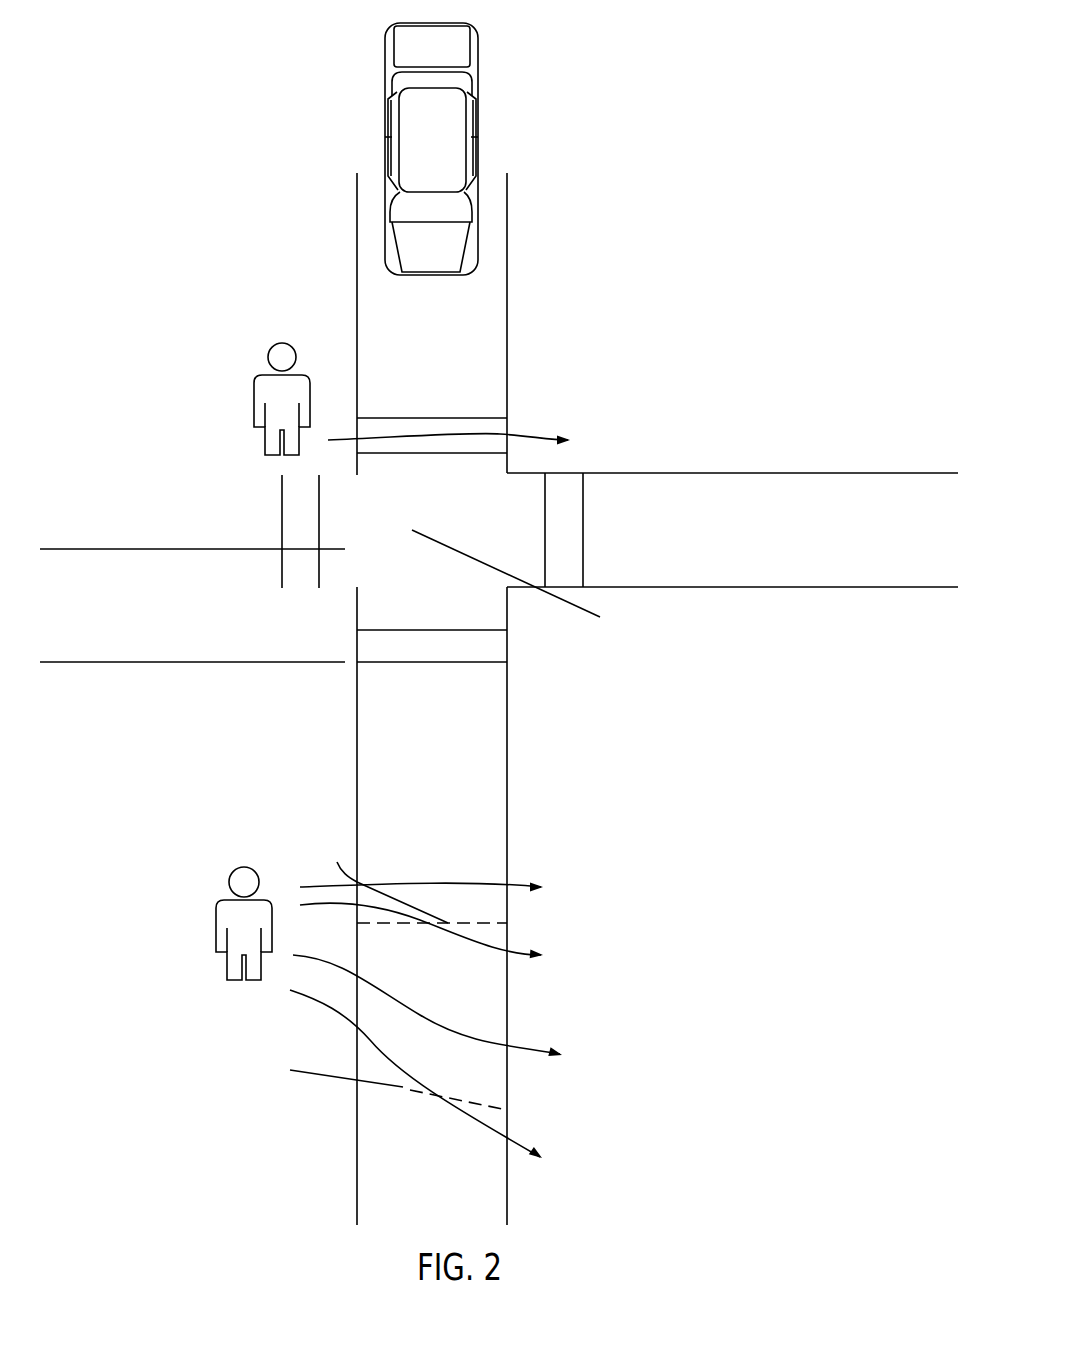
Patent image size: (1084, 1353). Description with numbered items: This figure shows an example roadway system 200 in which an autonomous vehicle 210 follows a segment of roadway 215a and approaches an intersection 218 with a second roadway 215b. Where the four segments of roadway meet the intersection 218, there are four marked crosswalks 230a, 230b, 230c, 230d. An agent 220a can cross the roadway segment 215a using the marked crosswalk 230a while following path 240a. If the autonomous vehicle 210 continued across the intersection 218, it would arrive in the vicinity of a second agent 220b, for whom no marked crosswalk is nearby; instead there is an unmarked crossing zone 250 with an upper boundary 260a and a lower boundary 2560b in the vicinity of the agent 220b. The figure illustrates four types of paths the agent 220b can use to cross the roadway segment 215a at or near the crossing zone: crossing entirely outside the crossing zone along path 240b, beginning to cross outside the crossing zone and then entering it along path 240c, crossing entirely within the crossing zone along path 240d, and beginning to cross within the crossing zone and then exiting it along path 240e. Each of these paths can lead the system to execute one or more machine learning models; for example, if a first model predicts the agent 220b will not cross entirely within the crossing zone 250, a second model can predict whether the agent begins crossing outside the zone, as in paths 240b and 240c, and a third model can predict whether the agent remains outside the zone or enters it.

The traffic environment 200 is at (188, 248).
The autonomous vehicle 210 is at (375, 230).
The roadway segment 215a is at (468, 325).
The second roadway 215b is at (712, 513).
The intersection 218 is at (600, 617).
The agent 220a is at (245, 398).
The second agent 220b is at (207, 922).
The marked crosswalk 230a is at (468, 418).
The marked crosswalk 230b is at (280, 550).
The marked crosswalk 230c is at (457, 630).
The marked crosswalk 230d is at (543, 548).
The path 240a is at (523, 433).
The path crossing entirely outside the crossing zone 240b is at (413, 880).
The path beginning outside then entering the crossing zone 240c is at (472, 943).
The path crossing entirely within the crossing zone 240d is at (520, 1037).
The path beginning within then exiting the crossing zone 240e is at (537, 1147).
The unmarked crossing zone 250 is at (457, 1074).
The upper boundary 260a is at (337, 862).
The predicted crossing line 2560b is at (290, 1070).